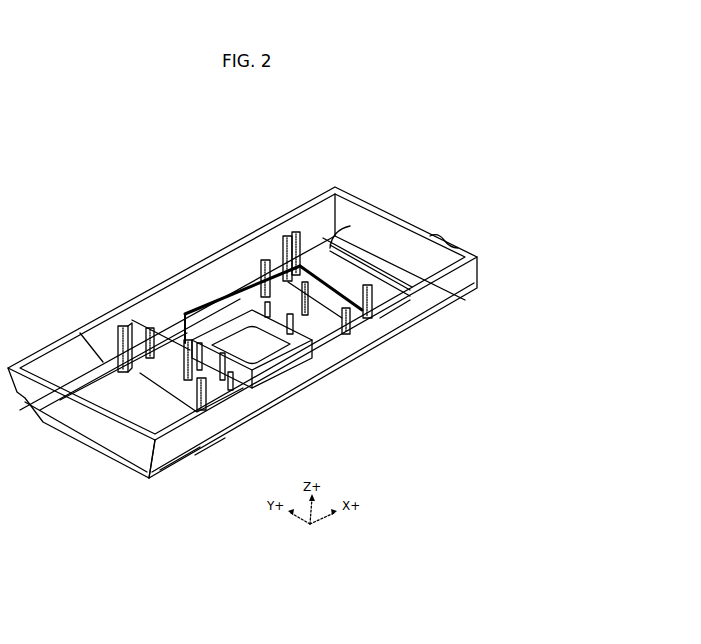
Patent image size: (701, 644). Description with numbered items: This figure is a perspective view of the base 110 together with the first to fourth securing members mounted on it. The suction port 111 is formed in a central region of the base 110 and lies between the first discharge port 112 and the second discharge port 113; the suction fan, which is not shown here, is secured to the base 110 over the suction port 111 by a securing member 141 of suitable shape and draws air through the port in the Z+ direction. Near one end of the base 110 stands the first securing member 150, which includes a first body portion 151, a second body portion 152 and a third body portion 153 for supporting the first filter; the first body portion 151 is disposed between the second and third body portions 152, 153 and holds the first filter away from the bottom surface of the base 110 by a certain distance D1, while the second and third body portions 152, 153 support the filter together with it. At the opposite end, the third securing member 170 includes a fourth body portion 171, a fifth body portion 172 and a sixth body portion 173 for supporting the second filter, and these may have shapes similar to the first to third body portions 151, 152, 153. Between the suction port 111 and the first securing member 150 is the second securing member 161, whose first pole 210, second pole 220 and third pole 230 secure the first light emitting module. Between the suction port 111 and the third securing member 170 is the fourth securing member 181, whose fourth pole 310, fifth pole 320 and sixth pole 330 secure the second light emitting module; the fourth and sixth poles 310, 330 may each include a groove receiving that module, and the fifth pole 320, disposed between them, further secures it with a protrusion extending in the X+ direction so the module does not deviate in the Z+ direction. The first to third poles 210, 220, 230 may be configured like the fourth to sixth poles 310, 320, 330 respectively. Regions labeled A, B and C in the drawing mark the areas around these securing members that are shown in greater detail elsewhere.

The base 110 is at (373, 207).
The suction port 111 is at (243, 288).
The first discharge port 112 is at (87, 372).
The second discharge port 113 is at (392, 262).
The securing member 141 is at (306, 372).
The first securing member 150 is at (207, 523).
The first body portion 151 is at (168, 432).
The second body portion 152 is at (132, 428).
The third body portion 153 is at (203, 430).
The second securing member 161 is at (190, 208).
The third securing member 170 is at (450, 380).
The fourth body portion 171 is at (371, 312).
The fifth body portion 172 is at (351, 324).
The sixth body portion 173 is at (405, 327).
The fourth securing member 181 is at (300, 139).
The first pole 210 is at (127, 324).
The second pole 220 is at (150, 326).
The third pole 230 is at (188, 338).
The fourth pole 310 is at (264, 258).
The fifth pole 320 is at (288, 234).
The sixth pole 330 is at (298, 231).
The region A is at (112, 309).
The region B is at (260, 262).
The region C is at (347, 308).
The distance D1 is at (79, 390).